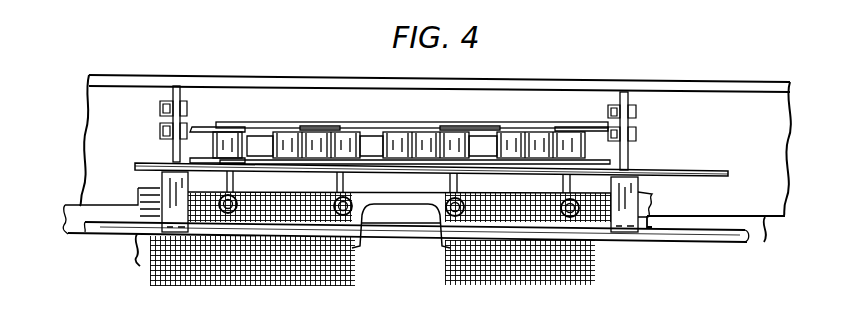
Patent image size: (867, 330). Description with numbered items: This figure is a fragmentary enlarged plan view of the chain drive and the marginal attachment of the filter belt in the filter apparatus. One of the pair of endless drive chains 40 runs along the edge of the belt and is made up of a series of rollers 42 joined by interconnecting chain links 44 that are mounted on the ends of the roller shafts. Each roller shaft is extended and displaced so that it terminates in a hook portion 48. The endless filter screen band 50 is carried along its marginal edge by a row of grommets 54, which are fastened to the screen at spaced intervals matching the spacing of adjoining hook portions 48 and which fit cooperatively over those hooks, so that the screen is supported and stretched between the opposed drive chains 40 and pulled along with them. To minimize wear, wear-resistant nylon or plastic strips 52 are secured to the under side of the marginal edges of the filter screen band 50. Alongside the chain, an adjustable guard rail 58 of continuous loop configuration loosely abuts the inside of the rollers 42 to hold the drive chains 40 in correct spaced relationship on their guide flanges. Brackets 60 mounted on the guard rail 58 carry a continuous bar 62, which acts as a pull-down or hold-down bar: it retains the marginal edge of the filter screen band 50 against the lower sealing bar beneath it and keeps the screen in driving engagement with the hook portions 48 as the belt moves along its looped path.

The drive chains 40 is at (400, 129).
The rollers 42 is at (453, 149).
The chain links 44 is at (366, 130).
The hook portion 48 is at (566, 215).
The filter screen band 50 is at (300, 273).
The plastic strips 52 is at (138, 190).
The grommets 54 is at (573, 216).
The guard rails 58 is at (686, 170).
The brackets 60 is at (627, 210).
The continuous bars 62 is at (708, 236).